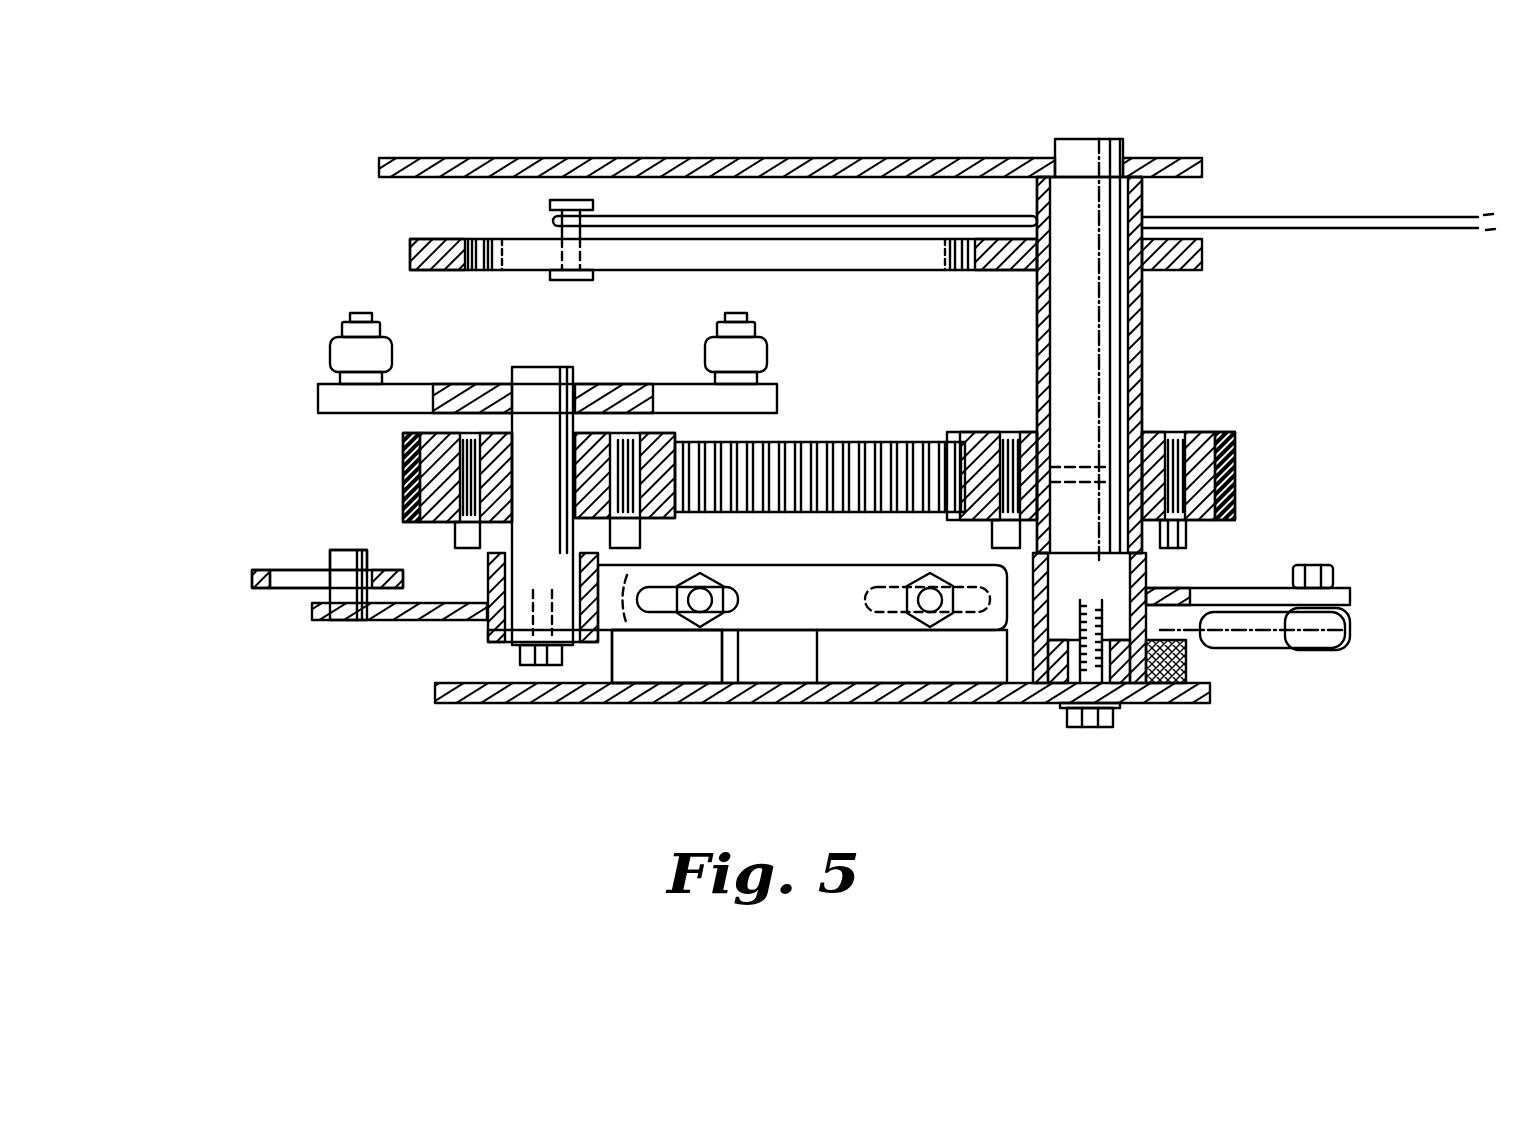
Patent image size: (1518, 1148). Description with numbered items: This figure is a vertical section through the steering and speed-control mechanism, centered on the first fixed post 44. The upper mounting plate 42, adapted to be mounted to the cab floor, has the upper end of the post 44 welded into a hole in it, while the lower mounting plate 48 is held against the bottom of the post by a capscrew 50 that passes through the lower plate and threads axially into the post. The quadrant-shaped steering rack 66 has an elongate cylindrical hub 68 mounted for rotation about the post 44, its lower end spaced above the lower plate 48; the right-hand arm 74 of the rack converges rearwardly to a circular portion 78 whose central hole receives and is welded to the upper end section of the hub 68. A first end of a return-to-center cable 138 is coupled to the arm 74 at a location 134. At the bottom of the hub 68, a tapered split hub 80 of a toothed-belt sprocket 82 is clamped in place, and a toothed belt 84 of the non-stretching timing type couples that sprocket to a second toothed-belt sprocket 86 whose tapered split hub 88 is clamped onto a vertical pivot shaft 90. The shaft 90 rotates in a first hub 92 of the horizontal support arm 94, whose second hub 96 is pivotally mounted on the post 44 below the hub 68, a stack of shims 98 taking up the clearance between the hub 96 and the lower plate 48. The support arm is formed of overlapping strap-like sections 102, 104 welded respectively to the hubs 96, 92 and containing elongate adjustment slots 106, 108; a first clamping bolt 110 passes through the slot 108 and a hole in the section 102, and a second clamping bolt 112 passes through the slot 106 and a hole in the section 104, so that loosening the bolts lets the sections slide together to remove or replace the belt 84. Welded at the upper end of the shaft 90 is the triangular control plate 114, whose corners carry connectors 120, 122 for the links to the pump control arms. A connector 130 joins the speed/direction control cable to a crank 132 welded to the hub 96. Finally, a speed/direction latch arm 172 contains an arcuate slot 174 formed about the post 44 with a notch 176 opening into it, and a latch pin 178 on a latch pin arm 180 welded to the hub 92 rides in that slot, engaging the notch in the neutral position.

The upper mounting plate 42 is at (778, 157).
The first fixed post 44 is at (1080, 140).
The lower mounting plate 48 is at (905, 703).
The capscrew 50 is at (1090, 727).
The steering rack 66 is at (396, 248).
The cylindrical hub 68 is at (1142, 320).
The right-hand arm 74 is at (800, 258).
The circular portion 78 is at (1010, 270).
The tapered split hub 80 is at (1150, 432).
The toothed-belt sprocket 82 is at (1200, 520).
The toothed belt 84 is at (920, 442).
The toothed-belt sprocket 86 is at (407, 522).
The tapered split hub 88 is at (620, 557).
The vertical pivot shaft 90 is at (540, 367).
The first hub 92 is at (487, 628).
The belt sprocket/control plate support arm 94 is at (668, 645).
The second hub 96 is at (1028, 680).
The stack of shims 98 is at (1160, 650).
The strap-like section 102 is at (1003, 555).
The strap-like section 104 is at (612, 683).
The adjustment slot 106 is at (905, 600).
The adjustment slot 108 is at (748, 598).
The first clamping bolt 110 is at (737, 632).
The second clamping bolt 112 is at (930, 627).
The control plate 114 is at (318, 398).
The connector 120 is at (350, 350).
The connector 122 is at (752, 355).
The connector 130 is at (1345, 640).
The crank 132 is at (1353, 596).
The cable attachment location 134 is at (548, 206).
The cable 138 is at (1395, 217).
The speed/direction latch arm 172 is at (252, 580).
The arcuate slot 174 is at (290, 570).
The notch 176 is at (333, 560).
The speed/direction latch pin 178 is at (325, 592).
The latch pin arm 180 is at (372, 622).